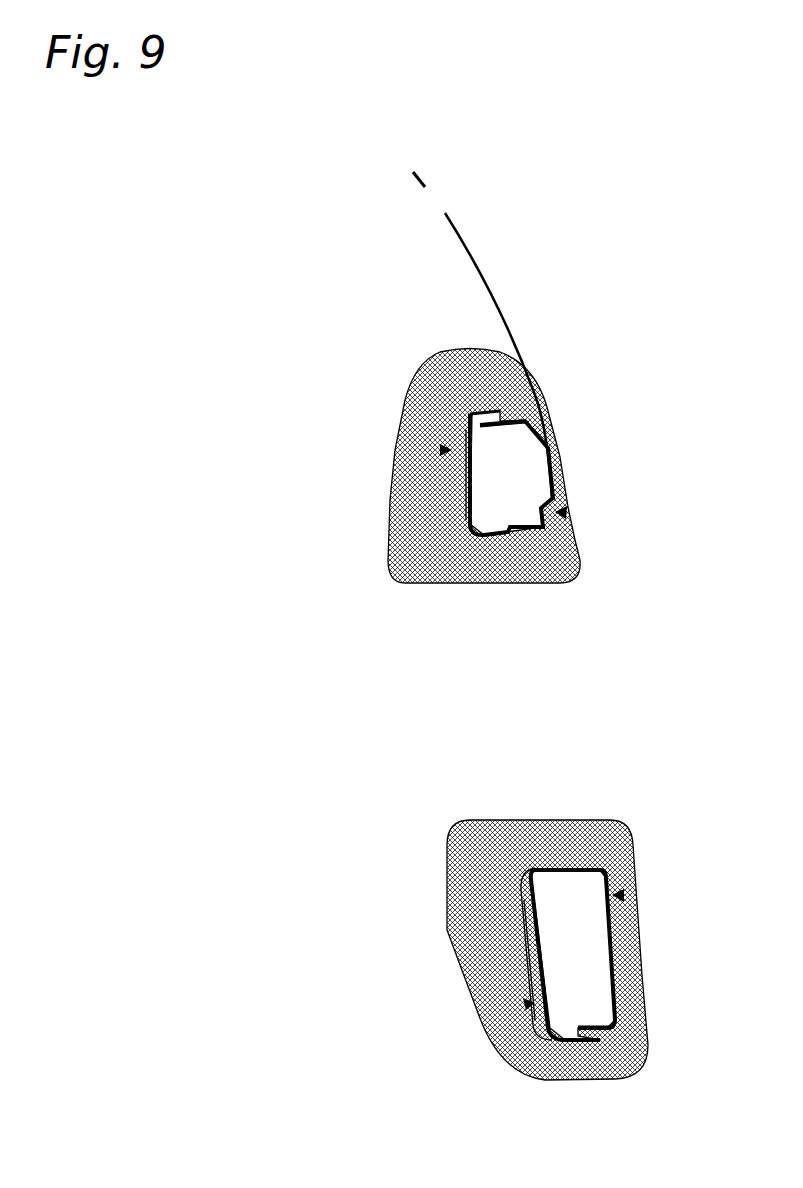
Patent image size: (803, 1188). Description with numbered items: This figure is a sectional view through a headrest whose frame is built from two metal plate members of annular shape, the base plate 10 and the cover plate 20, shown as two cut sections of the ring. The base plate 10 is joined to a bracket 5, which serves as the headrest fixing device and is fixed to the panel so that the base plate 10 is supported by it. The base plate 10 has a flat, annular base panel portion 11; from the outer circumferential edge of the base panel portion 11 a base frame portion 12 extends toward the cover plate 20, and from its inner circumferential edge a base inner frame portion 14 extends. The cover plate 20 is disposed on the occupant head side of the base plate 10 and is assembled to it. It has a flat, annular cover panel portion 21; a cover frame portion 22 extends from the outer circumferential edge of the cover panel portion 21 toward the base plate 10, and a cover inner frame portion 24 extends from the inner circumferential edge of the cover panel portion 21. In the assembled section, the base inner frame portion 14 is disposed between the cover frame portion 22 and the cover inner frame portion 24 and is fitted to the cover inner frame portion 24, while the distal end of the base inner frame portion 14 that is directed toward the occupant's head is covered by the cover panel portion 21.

The bracket 5 is at (457, 220).
The base plate 10 is at (556, 512).
The base panel portion 11 is at (560, 468).
The base frame portion 12 is at (518, 420).
The base inner frame portion 14 is at (530, 535).
The cover plate 20 is at (450, 450).
The cover panel portion 21 is at (465, 480).
The cover frame portion 22 is at (478, 413).
The cover inner frame portion 24 is at (517, 530).